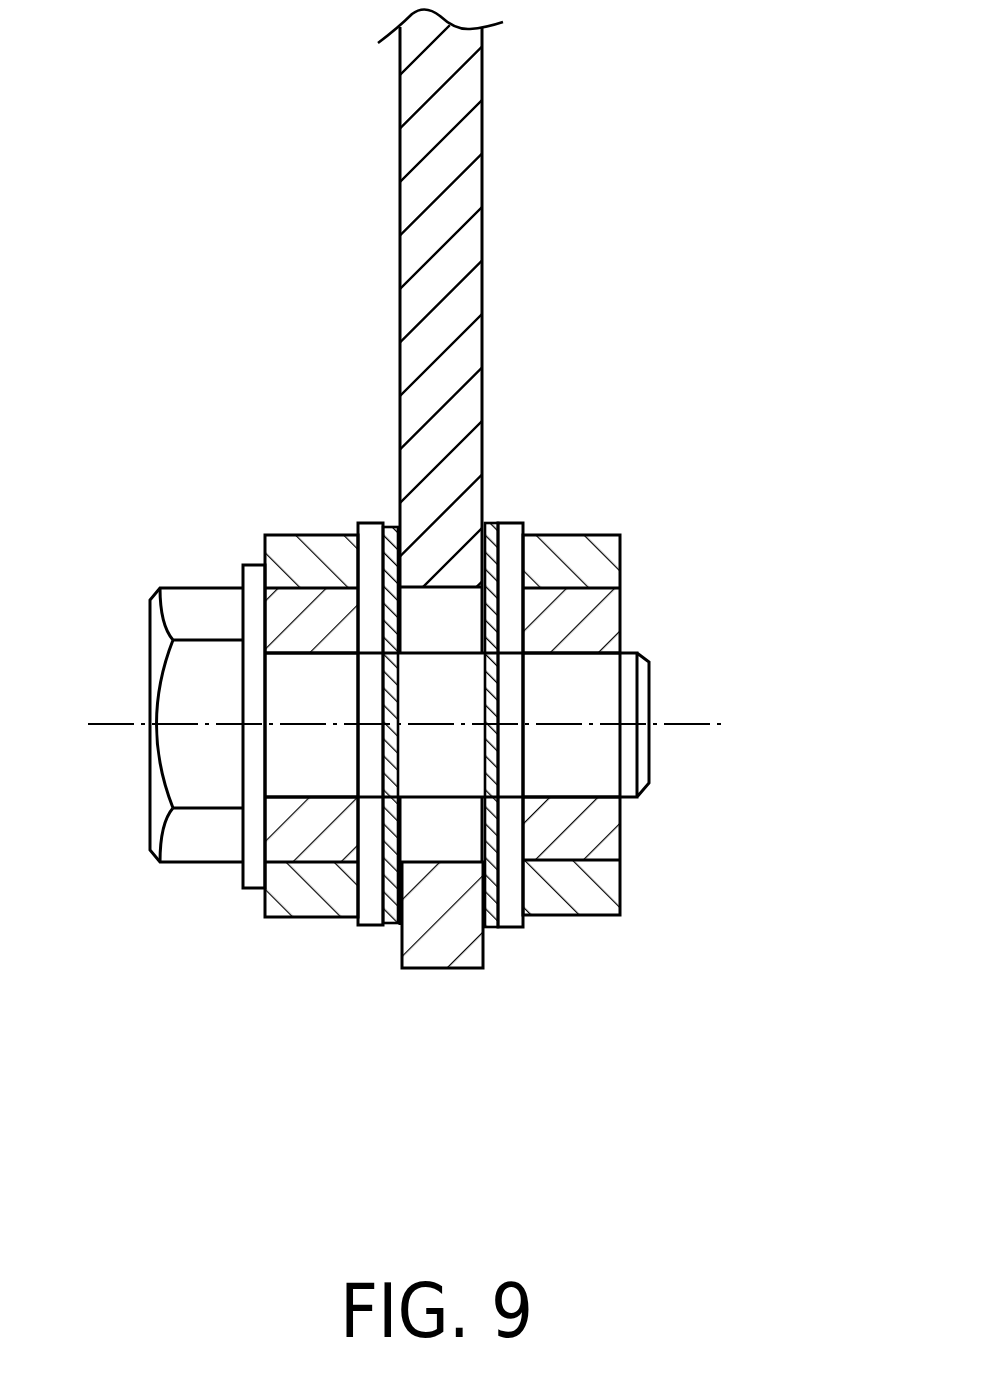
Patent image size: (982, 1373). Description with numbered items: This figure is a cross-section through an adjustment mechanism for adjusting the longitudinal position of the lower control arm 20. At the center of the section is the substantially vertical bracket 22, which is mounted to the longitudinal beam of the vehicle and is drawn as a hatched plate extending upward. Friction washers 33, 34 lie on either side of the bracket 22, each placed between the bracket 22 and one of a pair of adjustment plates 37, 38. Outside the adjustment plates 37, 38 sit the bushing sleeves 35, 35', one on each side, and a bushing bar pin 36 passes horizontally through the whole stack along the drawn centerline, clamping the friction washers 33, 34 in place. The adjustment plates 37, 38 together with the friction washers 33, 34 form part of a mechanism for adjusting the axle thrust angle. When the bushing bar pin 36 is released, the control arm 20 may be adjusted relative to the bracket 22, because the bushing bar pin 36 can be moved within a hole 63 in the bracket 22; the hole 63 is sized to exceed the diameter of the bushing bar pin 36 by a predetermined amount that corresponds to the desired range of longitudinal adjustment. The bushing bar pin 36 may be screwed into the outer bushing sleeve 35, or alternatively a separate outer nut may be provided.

The lower control arm 20 is at (305, 895).
The bracket 22 is at (425, 940).
The friction washer 33 is at (391, 530).
The friction washer 34 is at (491, 533).
The outer bushing sleeve 35 is at (656, 641).
The bushing sleeve 35' is at (174, 638).
The bushing bar pin 36 is at (697, 727).
The adjustment plate 37 is at (370, 917).
The adjustment plate 38 is at (513, 910).
The hole 63 is at (448, 865).